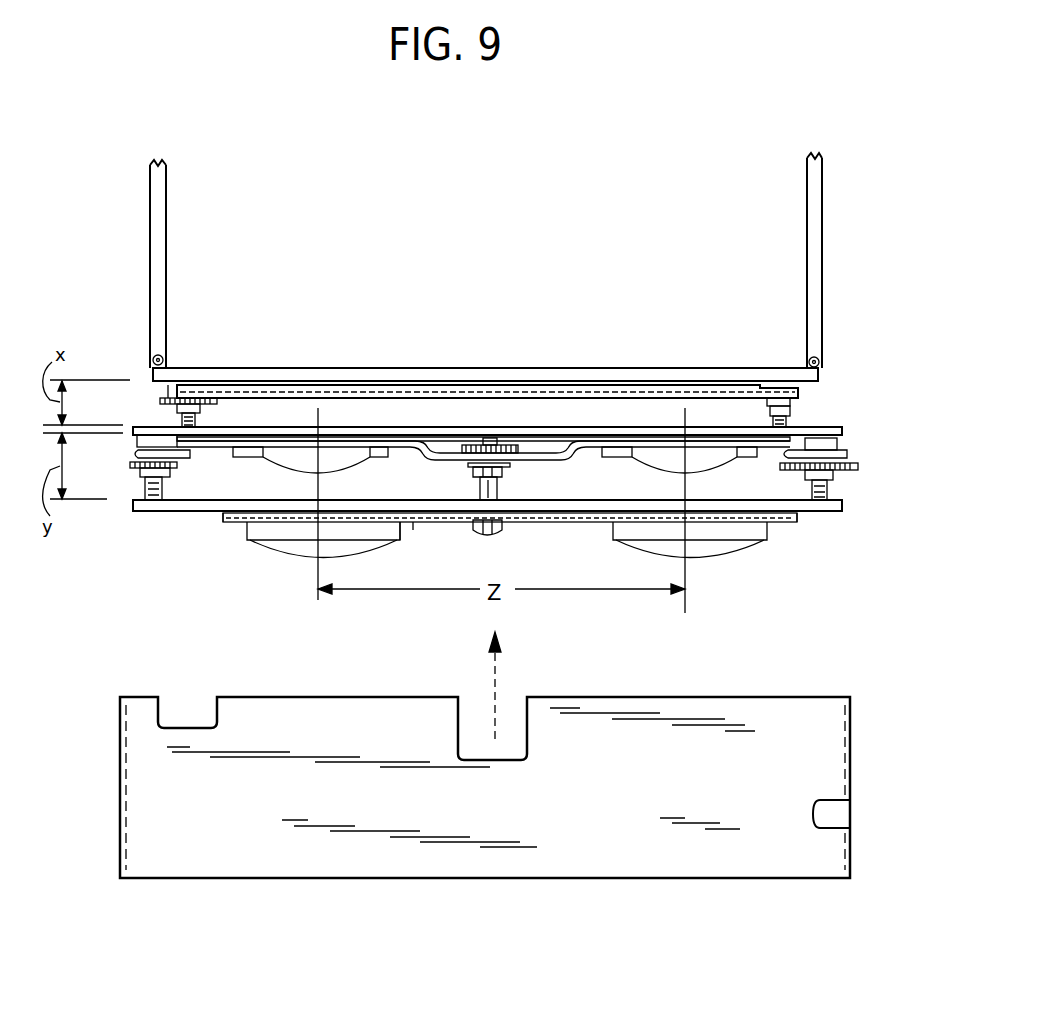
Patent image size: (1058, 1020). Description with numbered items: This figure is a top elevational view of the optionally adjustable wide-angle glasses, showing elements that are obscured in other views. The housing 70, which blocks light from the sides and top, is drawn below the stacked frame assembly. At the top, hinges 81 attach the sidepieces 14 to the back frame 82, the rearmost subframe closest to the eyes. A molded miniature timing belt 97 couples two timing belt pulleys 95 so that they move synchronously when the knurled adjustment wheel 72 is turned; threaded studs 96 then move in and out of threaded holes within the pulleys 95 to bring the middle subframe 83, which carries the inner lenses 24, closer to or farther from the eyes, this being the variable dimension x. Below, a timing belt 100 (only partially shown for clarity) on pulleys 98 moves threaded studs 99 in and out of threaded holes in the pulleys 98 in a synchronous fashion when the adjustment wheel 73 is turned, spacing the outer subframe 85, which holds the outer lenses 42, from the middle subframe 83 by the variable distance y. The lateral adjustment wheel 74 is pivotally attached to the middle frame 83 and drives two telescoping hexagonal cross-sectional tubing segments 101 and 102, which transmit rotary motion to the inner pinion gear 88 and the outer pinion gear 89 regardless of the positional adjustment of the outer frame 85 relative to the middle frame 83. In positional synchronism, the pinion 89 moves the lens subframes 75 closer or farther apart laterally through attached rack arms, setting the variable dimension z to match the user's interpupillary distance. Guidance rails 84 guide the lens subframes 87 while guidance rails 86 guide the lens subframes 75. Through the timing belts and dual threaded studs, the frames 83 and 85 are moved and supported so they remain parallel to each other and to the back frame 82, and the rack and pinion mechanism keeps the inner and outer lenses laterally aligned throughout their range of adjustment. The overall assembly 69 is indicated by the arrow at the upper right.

The sidepieces 14 is at (166, 218).
The inner lenses 24 is at (356, 464).
The outer lenses 42 is at (290, 549).
The adjustable mount assembly 69 is at (872, 258).
The housing 70 is at (843, 736).
The knurled adjustment wheel 72 is at (160, 401).
The adjustment wheel 73 is at (527, 485).
The lateral adjustment wheel 74 is at (510, 453).
The lens subframes 75 is at (413, 527).
The hinges 81 is at (161, 358).
The back frame 82 is at (818, 378).
The middle subframe 83 is at (842, 431).
The guidance rails 84 is at (250, 457).
The outer subframe 85 is at (843, 512).
The guidance rails 86 is at (212, 522).
The lens subframes 87 is at (222, 452).
The inner pinion gear 88 is at (503, 471).
The outer pinion gear 89 is at (503, 530).
The pulleys 95 is at (175, 396).
The threaded studs 96 is at (197, 418).
The molded miniature timing belt 97 is at (504, 392).
The pulleys 98 is at (136, 451).
The threaded studs 99 is at (150, 488).
The timing belt 100 is at (190, 458).
The telescoping hexagonal tubing segment 101 is at (470, 467).
The telescoping hexagonal tubing segment 102 is at (485, 495).